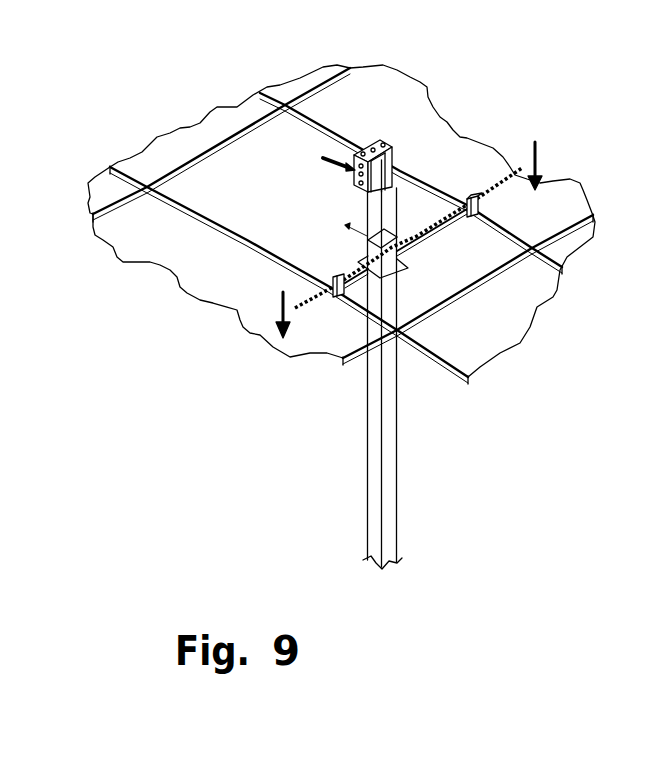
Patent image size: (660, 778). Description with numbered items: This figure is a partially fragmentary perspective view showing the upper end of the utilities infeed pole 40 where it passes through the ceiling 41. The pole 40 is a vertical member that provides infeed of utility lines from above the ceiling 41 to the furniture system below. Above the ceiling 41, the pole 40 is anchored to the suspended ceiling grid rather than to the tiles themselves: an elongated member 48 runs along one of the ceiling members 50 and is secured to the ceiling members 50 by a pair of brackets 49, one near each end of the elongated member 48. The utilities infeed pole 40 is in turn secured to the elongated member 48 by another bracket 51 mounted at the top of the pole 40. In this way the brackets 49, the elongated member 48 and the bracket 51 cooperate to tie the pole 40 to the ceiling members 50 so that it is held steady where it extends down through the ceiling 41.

The utilities infeed pole 40 is at (397, 423).
The ceiling 41 is at (248, 168).
The elongated member 48 is at (477, 195).
The brackets 49 is at (475, 207).
The ceiling members 50 is at (555, 235).
The bracket 51 is at (400, 232).